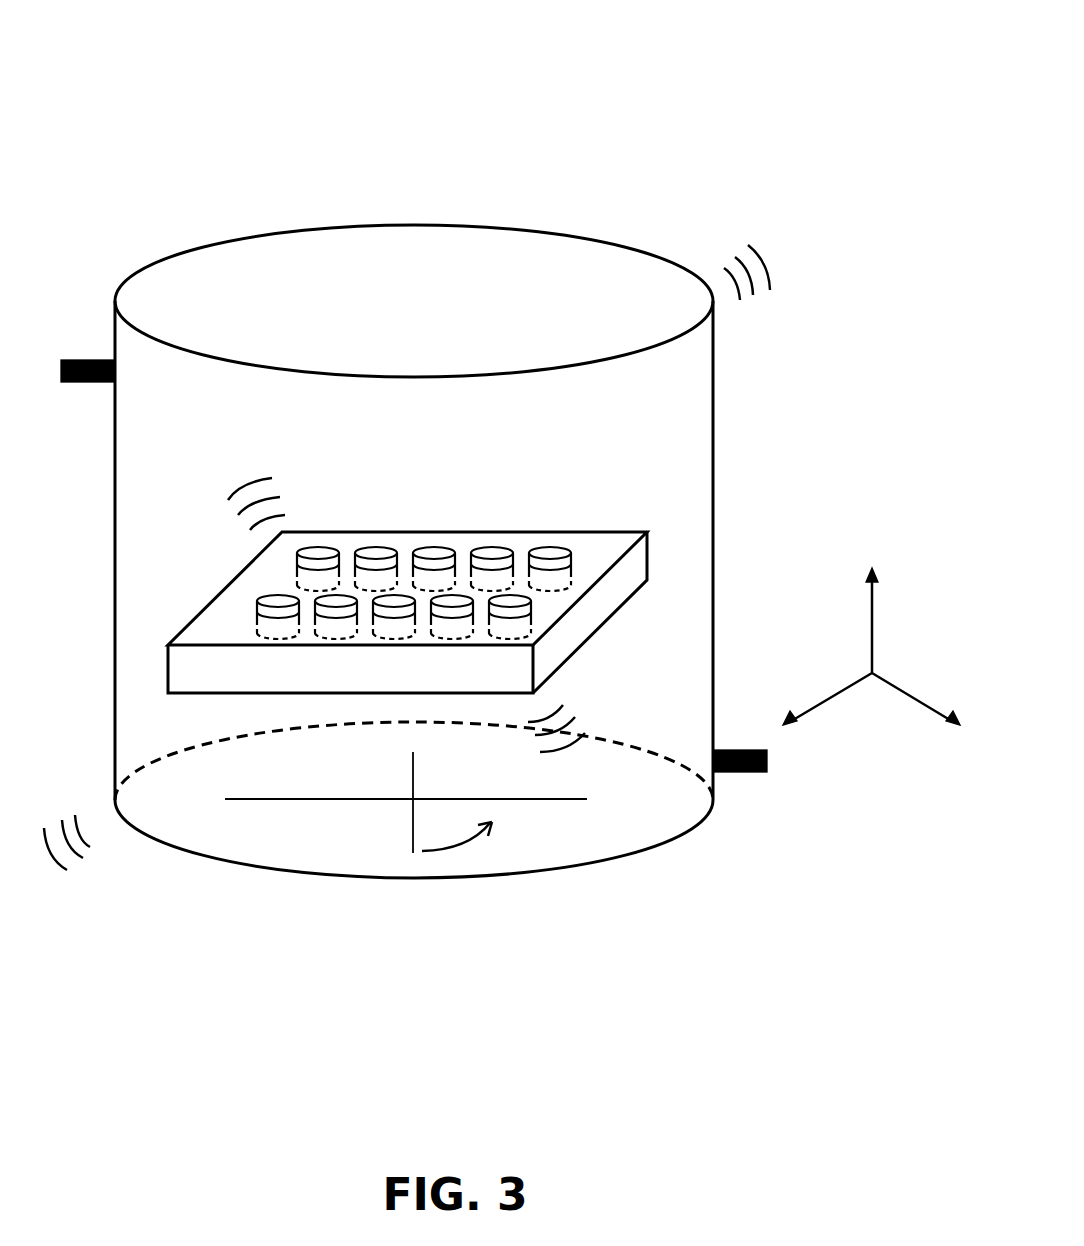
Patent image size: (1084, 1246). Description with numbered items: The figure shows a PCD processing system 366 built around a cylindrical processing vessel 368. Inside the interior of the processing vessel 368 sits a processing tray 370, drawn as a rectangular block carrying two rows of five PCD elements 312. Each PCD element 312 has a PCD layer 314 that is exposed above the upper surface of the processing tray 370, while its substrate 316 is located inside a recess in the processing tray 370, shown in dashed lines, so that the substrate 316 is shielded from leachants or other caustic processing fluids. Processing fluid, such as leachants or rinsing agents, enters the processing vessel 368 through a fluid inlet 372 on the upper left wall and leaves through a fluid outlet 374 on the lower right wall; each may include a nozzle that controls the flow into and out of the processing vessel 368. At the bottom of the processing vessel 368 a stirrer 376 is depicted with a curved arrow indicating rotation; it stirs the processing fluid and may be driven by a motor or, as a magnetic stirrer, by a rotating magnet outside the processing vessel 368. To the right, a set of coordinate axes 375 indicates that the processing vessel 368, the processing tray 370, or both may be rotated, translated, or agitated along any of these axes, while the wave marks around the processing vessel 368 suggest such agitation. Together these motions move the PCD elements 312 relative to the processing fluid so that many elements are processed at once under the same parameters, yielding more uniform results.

The PCD processing system 366 is at (833, 106).
The processing vessel 368 is at (390, 227).
The fluid inlet 372 is at (67, 360).
The fluid outlet 374 is at (732, 750).
The processing tray 370 is at (648, 555).
The PCD element 312 is at (493, 550).
The PCD layer 314 is at (555, 557).
The substrate 316 is at (570, 573).
The stirrer 376 is at (398, 800).
The coordinate axes 375 is at (878, 558).